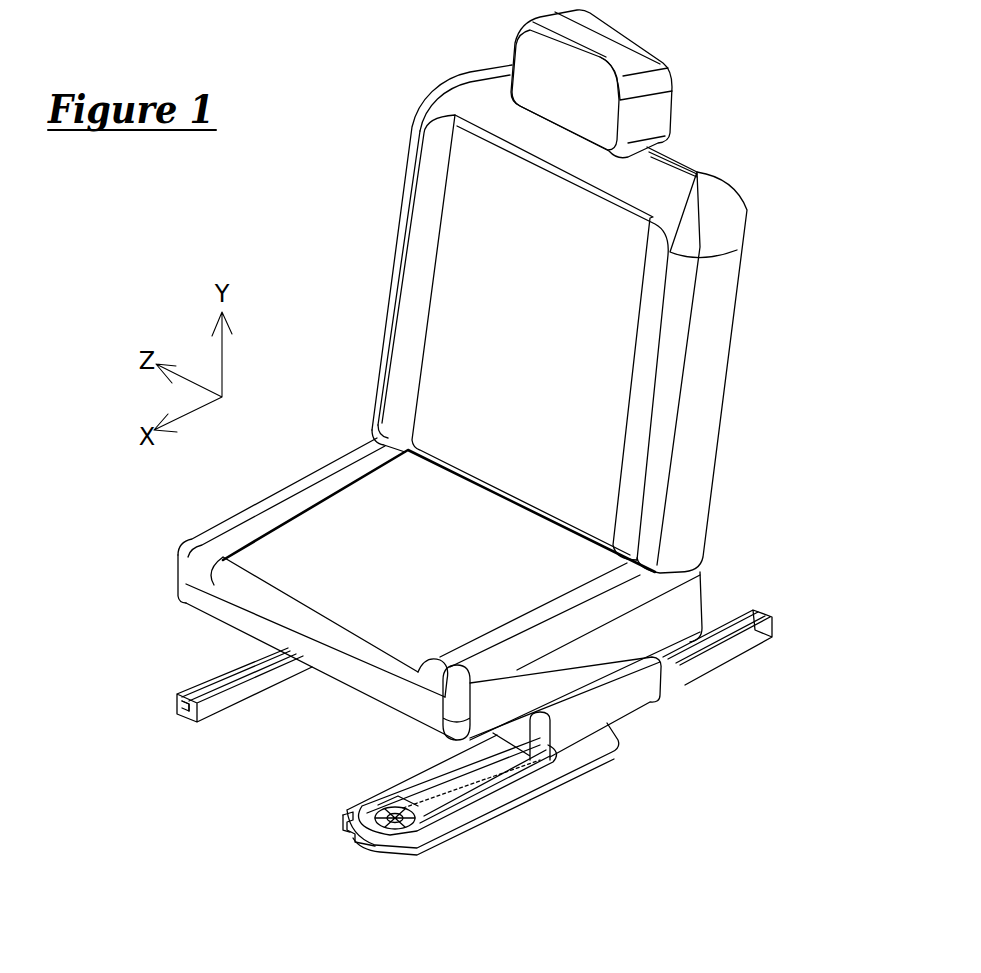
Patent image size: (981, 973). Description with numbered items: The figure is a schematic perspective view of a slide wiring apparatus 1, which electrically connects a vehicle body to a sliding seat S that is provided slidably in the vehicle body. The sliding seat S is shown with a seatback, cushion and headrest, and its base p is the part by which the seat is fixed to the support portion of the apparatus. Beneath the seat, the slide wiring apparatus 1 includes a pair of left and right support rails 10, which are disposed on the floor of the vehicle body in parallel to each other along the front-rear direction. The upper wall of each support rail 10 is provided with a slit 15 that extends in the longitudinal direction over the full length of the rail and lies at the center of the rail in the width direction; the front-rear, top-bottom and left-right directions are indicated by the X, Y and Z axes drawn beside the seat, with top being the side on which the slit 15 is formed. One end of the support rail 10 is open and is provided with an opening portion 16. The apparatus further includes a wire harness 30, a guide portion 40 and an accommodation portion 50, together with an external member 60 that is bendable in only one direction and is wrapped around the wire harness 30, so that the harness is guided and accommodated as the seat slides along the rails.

The slide wiring apparatus 1 is at (547, 803).
The support rail 10 is at (210, 687).
The slit 15 is at (253, 675).
The opening portion 16 is at (190, 727).
The wire harness 30 is at (487, 793).
The guide portion 40 is at (393, 843).
The accommodation portion 50 is at (592, 753).
The external member 60 is at (458, 825).
The sliding seat S is at (462, 375).
The base p is at (627, 705).